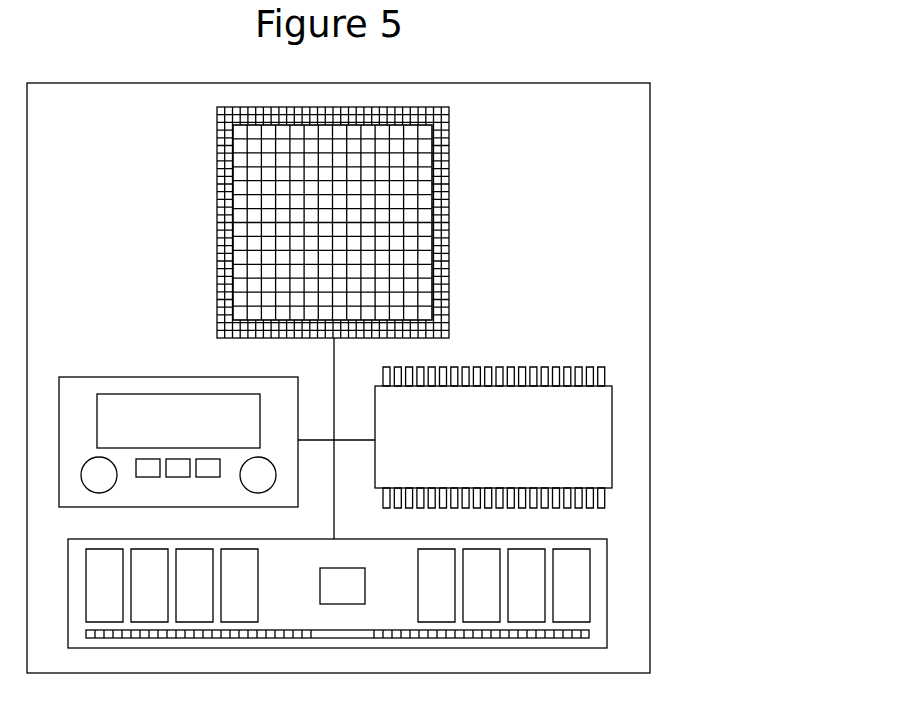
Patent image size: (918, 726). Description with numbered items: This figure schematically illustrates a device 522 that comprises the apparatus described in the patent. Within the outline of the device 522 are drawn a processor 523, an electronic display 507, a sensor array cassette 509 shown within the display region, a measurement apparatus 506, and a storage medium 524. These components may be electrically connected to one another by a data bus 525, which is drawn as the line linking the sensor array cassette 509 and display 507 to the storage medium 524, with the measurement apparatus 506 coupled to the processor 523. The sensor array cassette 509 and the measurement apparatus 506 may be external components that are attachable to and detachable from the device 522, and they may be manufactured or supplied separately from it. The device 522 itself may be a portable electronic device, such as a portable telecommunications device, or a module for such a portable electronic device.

The measurement apparatus 506 is at (217, 442).
The electronic display 507 is at (450, 172).
The sensor array cassette 509 is at (280, 209).
The device 522 is at (612, 212).
The processor 523 is at (493, 437).
The storage medium 524 is at (572, 582).
The data bus 525 is at (334, 355).